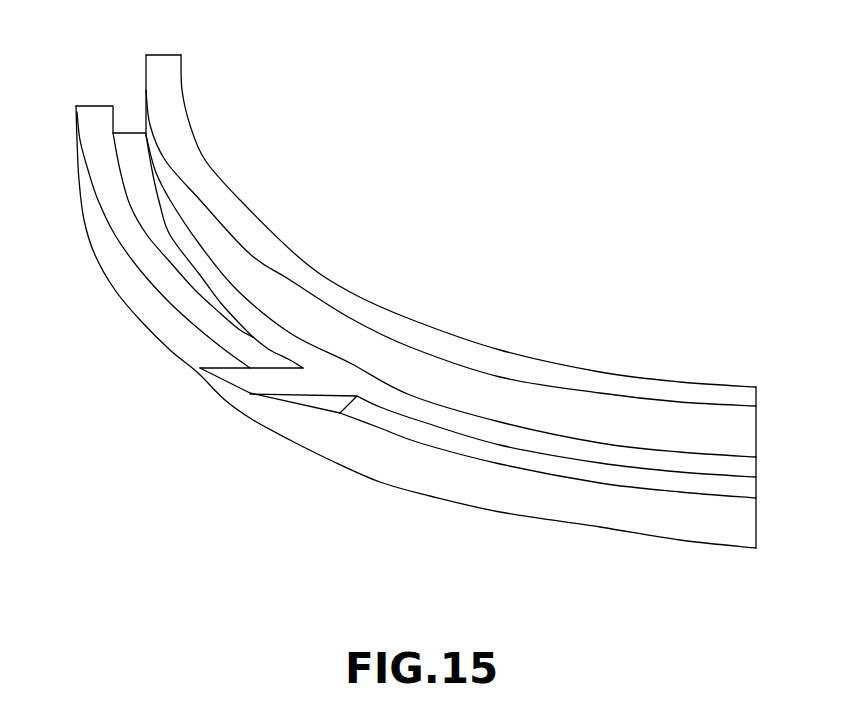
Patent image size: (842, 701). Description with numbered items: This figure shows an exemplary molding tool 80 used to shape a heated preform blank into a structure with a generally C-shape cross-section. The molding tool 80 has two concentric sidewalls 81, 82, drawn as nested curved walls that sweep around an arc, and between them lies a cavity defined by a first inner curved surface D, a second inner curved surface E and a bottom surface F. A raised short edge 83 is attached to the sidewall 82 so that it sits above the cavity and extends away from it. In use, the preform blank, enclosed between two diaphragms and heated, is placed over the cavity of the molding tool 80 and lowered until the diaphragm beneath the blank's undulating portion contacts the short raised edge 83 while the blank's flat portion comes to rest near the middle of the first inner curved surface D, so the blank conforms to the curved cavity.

The molding tool 80 is at (394, 319).
The sidewall 81 is at (528, 218).
The sidewall 82 is at (579, 511).
The raised short edge 83 is at (198, 370).
The first inner curved surface D is at (228, 252).
The second inner curved surface E is at (117, 124).
The bottom surface F is at (143, 178).